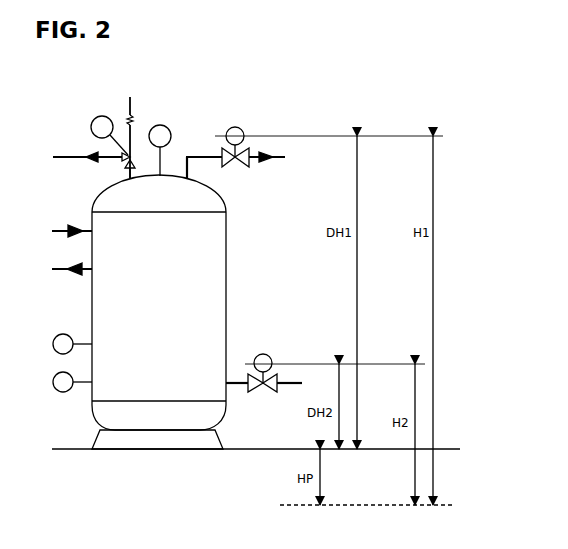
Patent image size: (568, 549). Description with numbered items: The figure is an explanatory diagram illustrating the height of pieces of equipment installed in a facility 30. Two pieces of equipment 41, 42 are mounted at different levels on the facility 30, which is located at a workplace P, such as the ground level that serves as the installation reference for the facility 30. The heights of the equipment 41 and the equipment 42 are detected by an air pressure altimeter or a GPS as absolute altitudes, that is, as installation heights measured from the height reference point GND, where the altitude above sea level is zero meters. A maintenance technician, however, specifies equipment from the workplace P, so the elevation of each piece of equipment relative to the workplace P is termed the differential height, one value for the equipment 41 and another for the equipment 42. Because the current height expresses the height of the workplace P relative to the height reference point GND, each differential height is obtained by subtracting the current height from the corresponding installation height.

The facility 30 is at (71, 105).
The equipment 41 is at (235, 127).
The equipment 42 is at (263, 354).
The workplace P is at (260, 449).
The height reference point GND is at (373, 505).